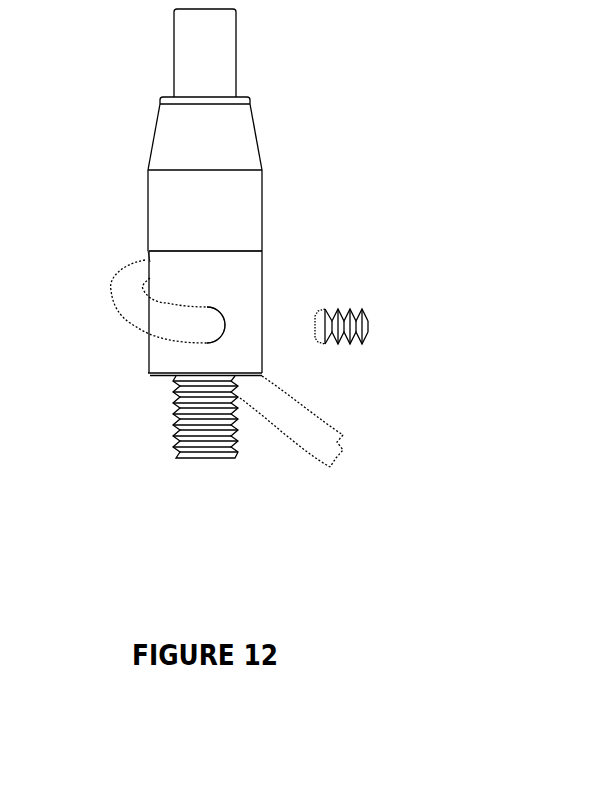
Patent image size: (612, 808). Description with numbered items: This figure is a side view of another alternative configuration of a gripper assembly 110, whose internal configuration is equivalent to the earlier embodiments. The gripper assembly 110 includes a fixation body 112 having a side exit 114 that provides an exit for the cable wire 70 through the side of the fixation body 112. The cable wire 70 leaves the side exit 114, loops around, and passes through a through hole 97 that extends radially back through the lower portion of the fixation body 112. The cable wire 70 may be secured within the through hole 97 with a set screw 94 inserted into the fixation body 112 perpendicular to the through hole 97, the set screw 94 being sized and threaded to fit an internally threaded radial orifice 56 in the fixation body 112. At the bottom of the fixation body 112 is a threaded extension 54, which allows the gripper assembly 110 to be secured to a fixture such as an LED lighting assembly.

The gripper assembly 110 is at (268, 158).
The fixation body 112 is at (257, 266).
The side exit 114 is at (150, 262).
The cable wire 70 is at (132, 305).
The through hole 97 is at (223, 315).
The set screw 94 is at (350, 322).
The internally threaded radial orifice 56 is at (272, 325).
The threaded extension 54 is at (230, 450).